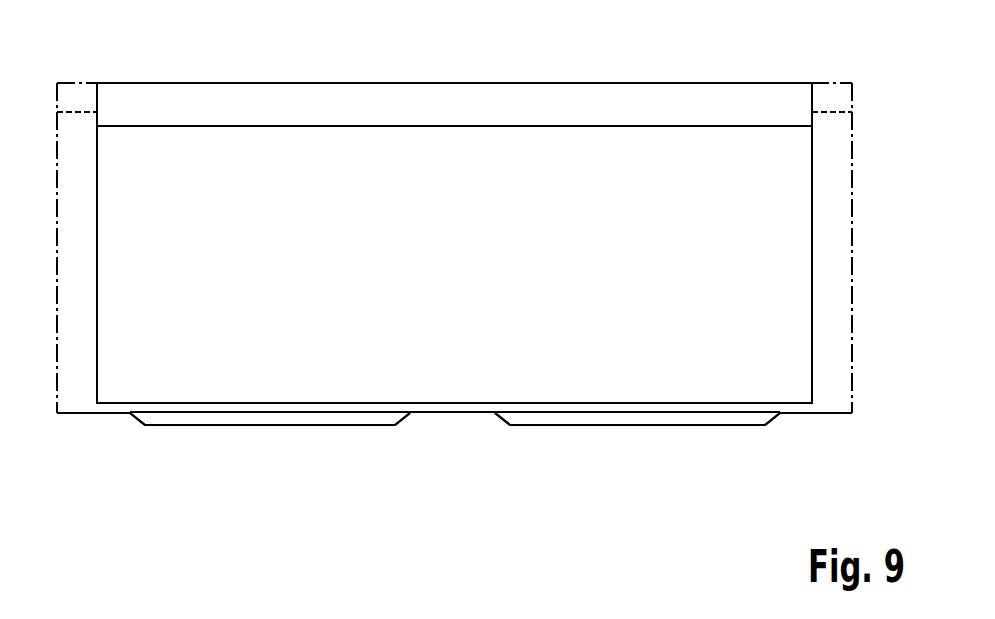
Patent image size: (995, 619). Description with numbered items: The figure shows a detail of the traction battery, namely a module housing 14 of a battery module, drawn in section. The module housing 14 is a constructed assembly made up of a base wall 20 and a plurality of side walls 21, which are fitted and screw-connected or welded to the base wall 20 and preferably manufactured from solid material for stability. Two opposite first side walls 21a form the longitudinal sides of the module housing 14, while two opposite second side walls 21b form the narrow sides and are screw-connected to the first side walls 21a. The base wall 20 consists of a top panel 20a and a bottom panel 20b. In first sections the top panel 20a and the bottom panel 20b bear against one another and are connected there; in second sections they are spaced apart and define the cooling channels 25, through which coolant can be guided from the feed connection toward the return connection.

The module housing 14 is at (733, 85).
The side walls 21 is at (454, 243).
The first side walls 21a is at (74, 360).
The second side walls 21b is at (447, 185).
The base wall 20 is at (122, 418).
The top panel 20a is at (207, 411).
The bottom panel 20b is at (340, 427).
The cooling channels 25 is at (250, 424).